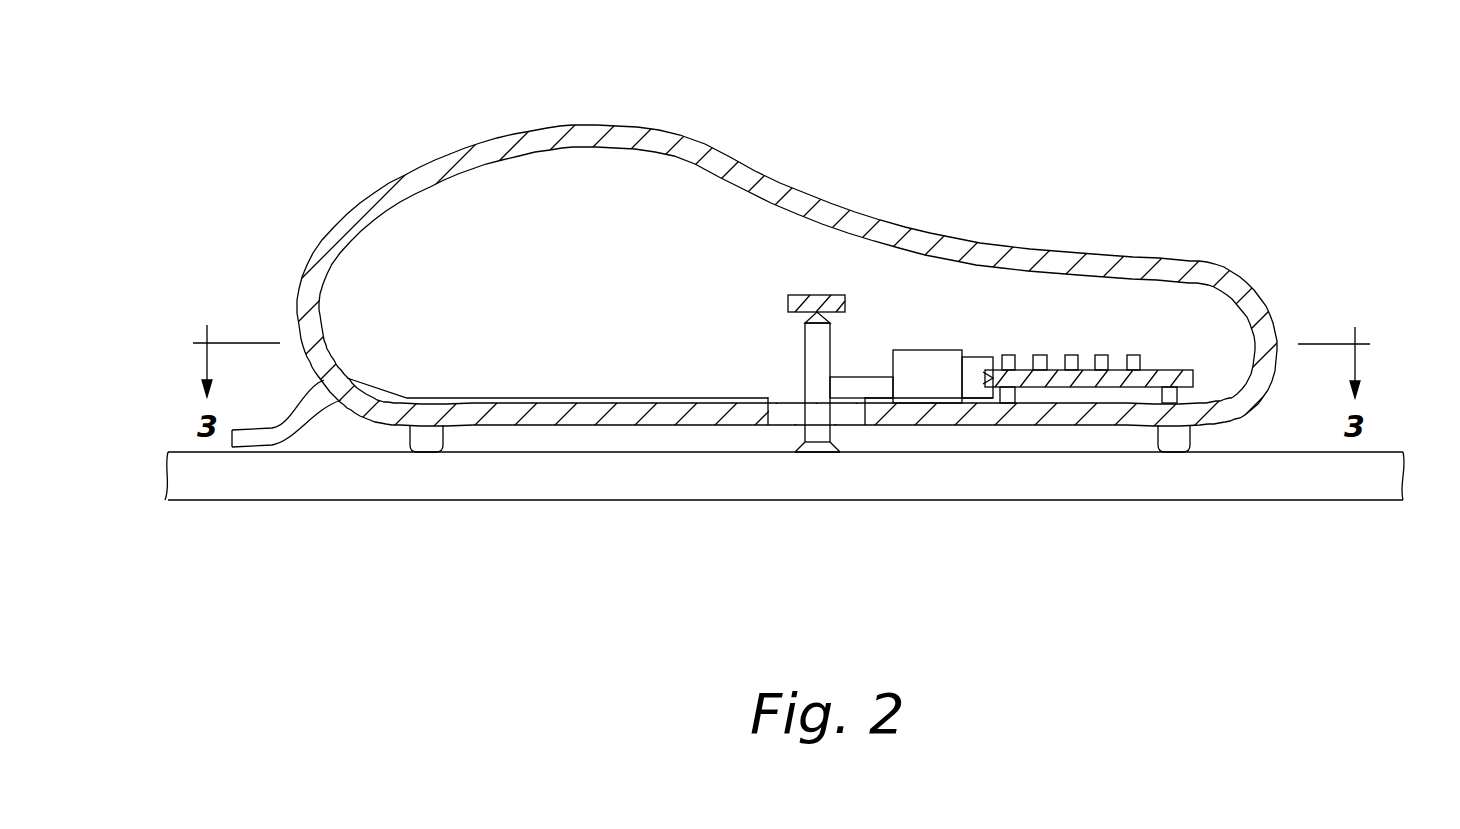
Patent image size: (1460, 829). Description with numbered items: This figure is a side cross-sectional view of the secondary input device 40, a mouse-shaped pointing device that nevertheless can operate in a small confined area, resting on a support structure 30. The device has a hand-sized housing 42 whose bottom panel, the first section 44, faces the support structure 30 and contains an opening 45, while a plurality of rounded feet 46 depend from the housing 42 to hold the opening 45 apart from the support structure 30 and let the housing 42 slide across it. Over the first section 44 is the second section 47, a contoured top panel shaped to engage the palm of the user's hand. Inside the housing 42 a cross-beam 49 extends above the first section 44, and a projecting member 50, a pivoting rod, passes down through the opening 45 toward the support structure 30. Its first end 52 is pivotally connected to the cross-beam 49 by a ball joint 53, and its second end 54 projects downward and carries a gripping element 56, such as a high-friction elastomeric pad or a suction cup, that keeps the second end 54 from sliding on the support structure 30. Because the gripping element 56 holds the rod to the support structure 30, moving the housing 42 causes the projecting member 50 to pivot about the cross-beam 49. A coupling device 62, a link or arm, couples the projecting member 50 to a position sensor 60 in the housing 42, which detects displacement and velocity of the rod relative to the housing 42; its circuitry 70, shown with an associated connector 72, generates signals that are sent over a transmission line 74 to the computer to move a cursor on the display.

The support structure 30 is at (1385, 452).
The secondary input device 40 is at (222, 106).
The housing 42 is at (1268, 332).
The first section 44 is at (610, 401).
The opening 45 is at (782, 417).
The feet 46 is at (430, 449).
The second section 47 is at (822, 195).
The cross-beam 49 is at (818, 295).
The projecting member 50 is at (803, 385).
The first end 52 is at (812, 314).
The ball joint 53 is at (847, 313).
The second end 54 is at (826, 440).
The gripping element 56 is at (817, 453).
The position sensor 60 is at (930, 350).
The coupling device 62 is at (865, 377).
The circuitry 70 is at (1165, 370).
The connector 72 is at (985, 357).
The transmission line 74 is at (260, 441).